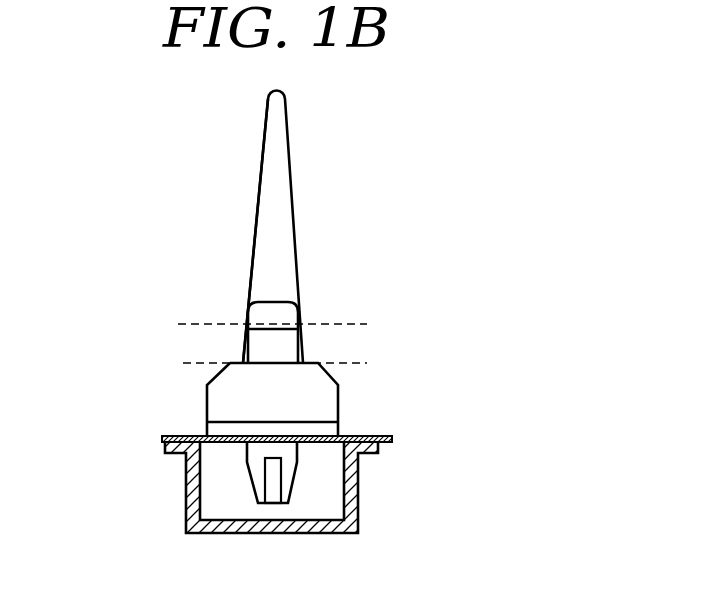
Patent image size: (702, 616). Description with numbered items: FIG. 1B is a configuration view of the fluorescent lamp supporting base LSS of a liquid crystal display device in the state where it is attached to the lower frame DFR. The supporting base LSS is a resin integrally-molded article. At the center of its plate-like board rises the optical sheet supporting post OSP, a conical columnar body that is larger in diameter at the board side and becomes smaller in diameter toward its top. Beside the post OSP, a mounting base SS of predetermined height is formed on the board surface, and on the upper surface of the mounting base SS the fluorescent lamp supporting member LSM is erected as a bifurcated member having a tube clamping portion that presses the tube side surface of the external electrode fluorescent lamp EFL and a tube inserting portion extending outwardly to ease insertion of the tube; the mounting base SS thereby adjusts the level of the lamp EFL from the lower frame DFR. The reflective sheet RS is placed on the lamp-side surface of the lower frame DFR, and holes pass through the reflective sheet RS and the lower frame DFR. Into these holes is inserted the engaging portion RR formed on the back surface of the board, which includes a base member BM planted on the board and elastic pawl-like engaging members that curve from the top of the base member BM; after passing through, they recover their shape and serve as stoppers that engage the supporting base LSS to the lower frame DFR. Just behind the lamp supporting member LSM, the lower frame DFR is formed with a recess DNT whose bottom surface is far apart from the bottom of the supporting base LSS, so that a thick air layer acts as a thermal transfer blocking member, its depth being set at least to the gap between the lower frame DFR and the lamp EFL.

The fluorescent lamp supporting base LSS is at (310, 195).
The optical sheet supporting post OSP is at (262, 232).
The external electrode fluorescent lamp EFL is at (342, 324).
The fluorescent lamp supporting member LSM is at (280, 352).
The mounting base SS is at (242, 412).
The reflective sheet RS is at (180, 430).
The base member BM is at (260, 490).
The lower frame DFR is at (372, 448).
The engaging portion RR is at (237, 503).
The recess DNT is at (288, 519).